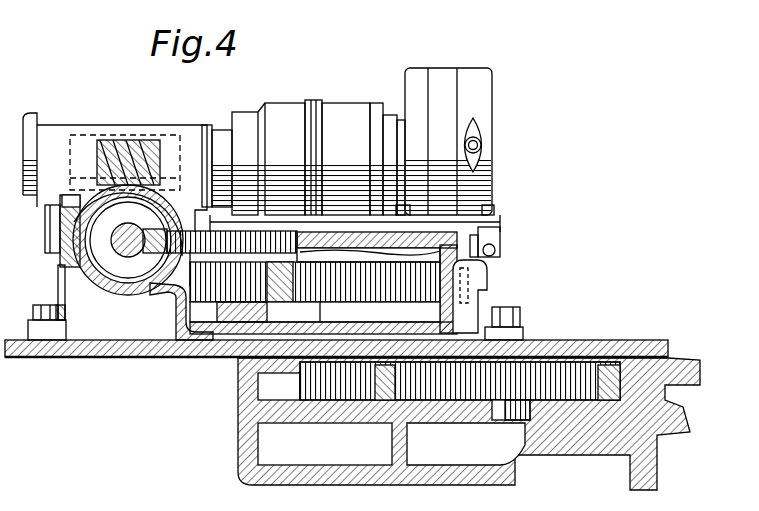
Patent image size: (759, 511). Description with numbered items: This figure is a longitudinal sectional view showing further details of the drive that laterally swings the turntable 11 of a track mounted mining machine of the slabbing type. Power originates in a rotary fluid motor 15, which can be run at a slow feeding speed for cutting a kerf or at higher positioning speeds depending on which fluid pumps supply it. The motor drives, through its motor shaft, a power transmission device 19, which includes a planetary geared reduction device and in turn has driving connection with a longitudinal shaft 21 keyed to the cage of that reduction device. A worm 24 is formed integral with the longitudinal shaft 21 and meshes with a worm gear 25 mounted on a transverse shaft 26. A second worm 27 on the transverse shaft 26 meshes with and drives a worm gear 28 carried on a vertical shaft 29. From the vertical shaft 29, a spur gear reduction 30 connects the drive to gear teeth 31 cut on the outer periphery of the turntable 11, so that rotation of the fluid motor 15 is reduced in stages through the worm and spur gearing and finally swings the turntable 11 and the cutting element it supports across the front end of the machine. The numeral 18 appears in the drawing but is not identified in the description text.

The turntable 11 is at (684, 355).
The fluid motor 15 is at (452, 68).
The bracket 18 is at (150, 305).
The power transmission device 19 is at (351, 105).
The longitudinal shaft 21 is at (86, 150).
The worm 24 is at (133, 150).
The worm gear 25 is at (88, 197).
The transverse shaft 26 is at (124, 296).
The worm 27 is at (100, 297).
The worm gear 28 is at (190, 124).
The vertical shaft 29 is at (222, 335).
The spur gear reduction 30 is at (500, 250).
The gear teeth 31 is at (634, 345).